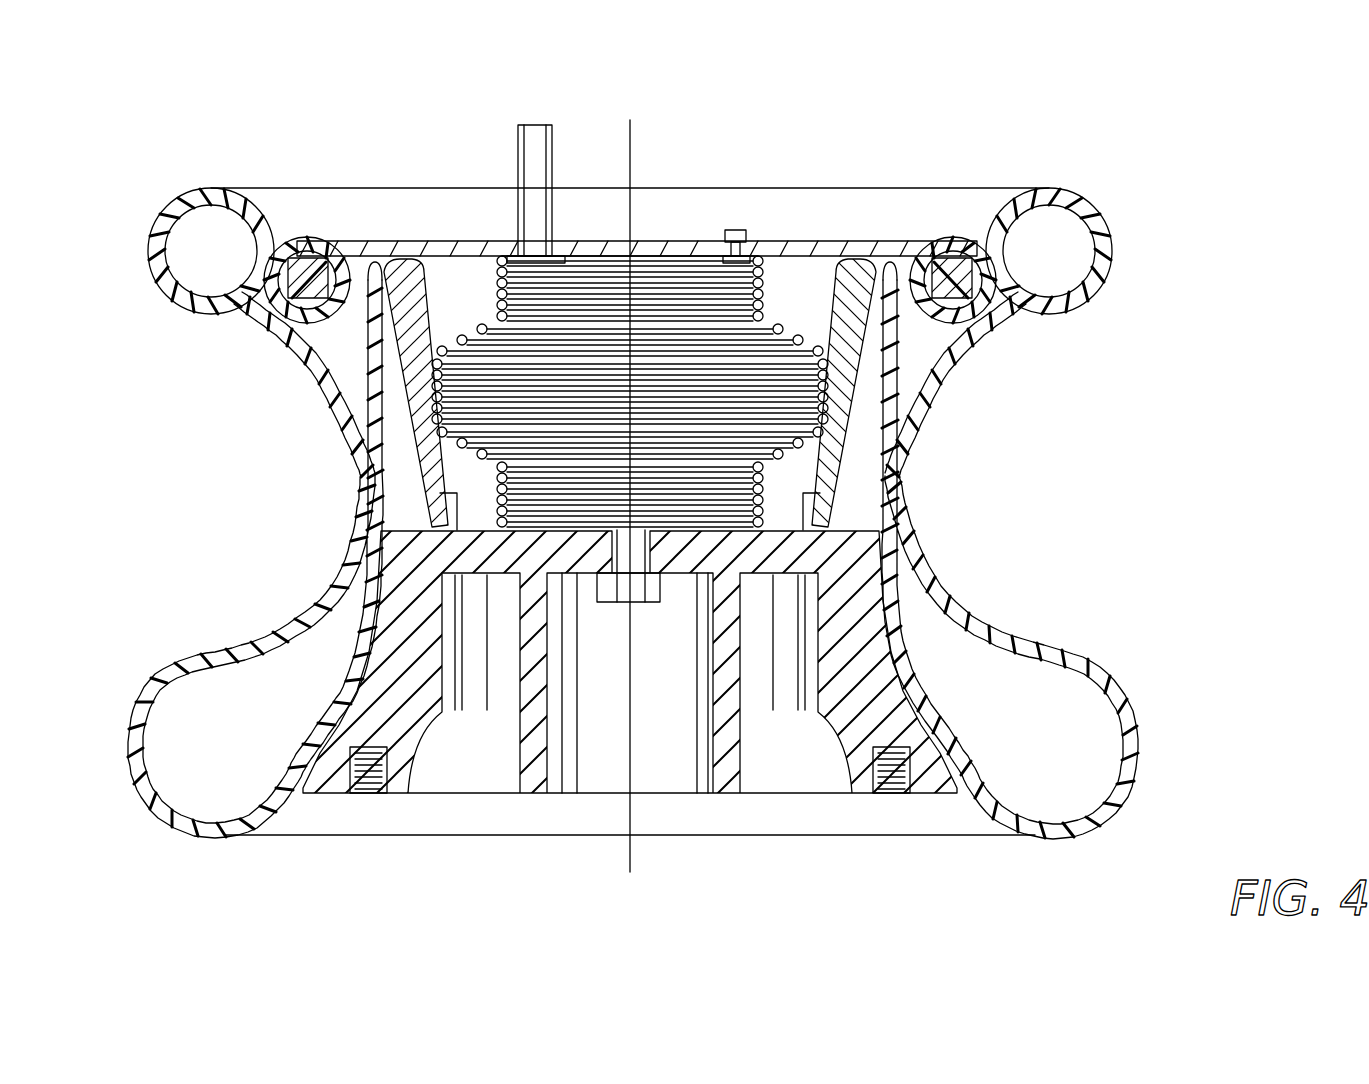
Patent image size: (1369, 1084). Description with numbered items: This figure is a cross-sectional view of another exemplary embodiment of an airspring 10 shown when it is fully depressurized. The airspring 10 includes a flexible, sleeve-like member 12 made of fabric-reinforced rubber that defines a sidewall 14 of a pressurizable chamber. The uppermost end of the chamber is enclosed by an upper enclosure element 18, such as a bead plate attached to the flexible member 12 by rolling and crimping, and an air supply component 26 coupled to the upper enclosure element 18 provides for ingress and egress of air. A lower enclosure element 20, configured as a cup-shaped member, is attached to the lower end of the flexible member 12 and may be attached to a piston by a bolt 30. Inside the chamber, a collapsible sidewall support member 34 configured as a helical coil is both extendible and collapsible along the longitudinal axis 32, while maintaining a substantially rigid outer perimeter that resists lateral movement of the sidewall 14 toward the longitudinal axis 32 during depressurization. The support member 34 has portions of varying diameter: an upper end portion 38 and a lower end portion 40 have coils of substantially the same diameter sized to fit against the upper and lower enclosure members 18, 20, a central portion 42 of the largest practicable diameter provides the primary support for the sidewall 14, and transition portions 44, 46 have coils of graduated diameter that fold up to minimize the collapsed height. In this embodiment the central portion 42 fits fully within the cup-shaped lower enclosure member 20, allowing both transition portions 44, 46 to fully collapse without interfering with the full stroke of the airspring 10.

The airspring 10 is at (140, 133).
The flexible sleeve-like member 12 is at (155, 646).
The sidewall 14 is at (932, 400).
The upper enclosure element 18 is at (912, 260).
The lower enclosure element 20 is at (812, 280).
The air supply component 26 is at (553, 148).
The bolt 30 is at (640, 597).
The longitudinal axis 32 is at (632, 158).
The collapsible sidewall support member 34 is at (690, 275).
The upper end portion 38 is at (490, 285).
The lower end portion 40 is at (490, 498).
The central portion 42 is at (440, 405).
The transition portion 44 is at (465, 330).
The transition portion 46 is at (460, 447).